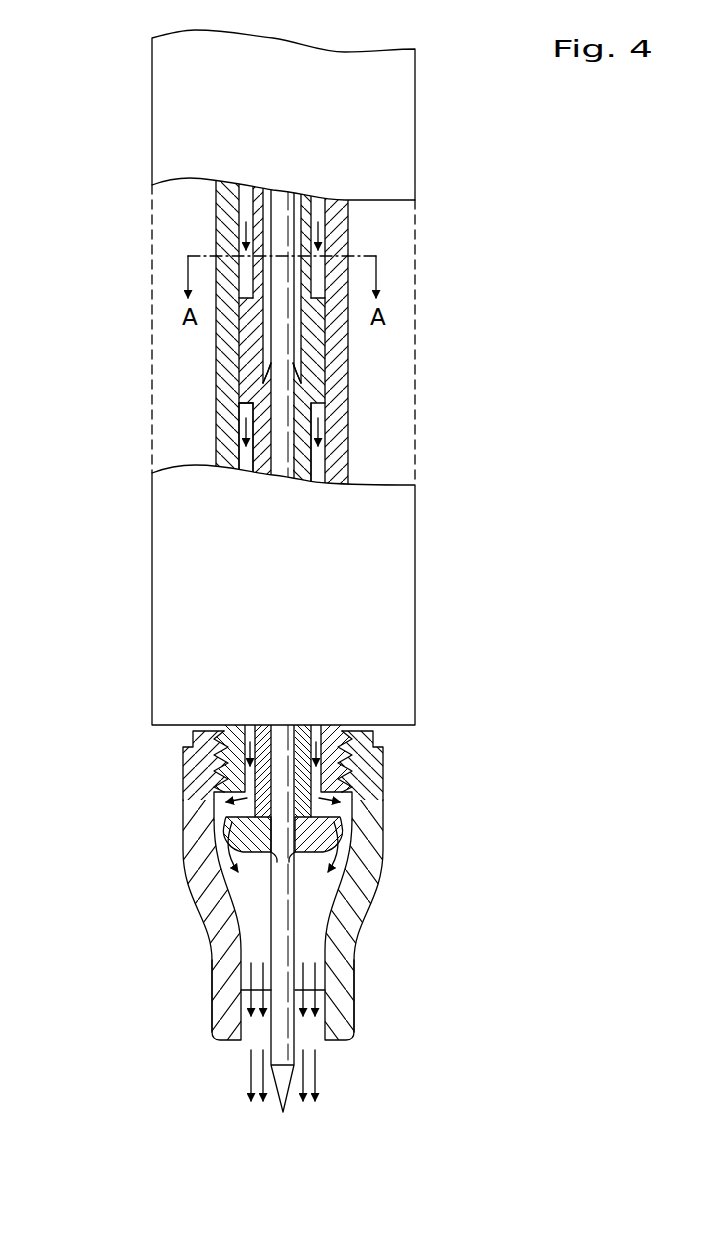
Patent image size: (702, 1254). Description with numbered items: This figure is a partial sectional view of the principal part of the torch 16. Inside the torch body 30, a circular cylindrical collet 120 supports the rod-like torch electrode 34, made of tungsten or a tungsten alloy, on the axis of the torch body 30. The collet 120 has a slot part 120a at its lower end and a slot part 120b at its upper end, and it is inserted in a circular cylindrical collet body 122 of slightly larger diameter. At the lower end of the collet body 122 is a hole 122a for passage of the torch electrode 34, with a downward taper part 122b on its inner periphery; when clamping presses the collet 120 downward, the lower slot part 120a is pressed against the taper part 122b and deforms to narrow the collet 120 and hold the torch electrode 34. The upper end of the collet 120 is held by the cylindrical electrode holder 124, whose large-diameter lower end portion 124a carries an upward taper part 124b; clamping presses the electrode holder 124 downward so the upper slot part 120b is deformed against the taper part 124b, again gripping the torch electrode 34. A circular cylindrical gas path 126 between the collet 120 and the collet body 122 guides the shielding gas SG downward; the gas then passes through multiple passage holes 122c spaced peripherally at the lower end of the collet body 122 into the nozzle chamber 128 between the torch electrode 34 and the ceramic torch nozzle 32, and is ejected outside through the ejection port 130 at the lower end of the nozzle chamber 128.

The torch 16 is at (443, 115).
The torch body 30 is at (152, 123).
The torch nozzle 32 is at (360, 953).
The torch electrode 34 is at (280, 215).
The collet 120 is at (255, 458).
The slot part 120a is at (233, 771).
The slot part 120b is at (260, 412).
The collet body 122 is at (345, 353).
The hole 122a is at (287, 863).
The taper part 122b is at (305, 820).
The passage holes 122c is at (330, 782).
The electrode holder 124 is at (307, 222).
The large-diameter lower end portion 124a is at (318, 373).
The taper part 124b is at (307, 418).
The gas path 126 is at (312, 458).
The nozzle chamber 128 is at (313, 905).
The ejection port 130 is at (310, 1040).
The shielding gas SG is at (250, 1080).